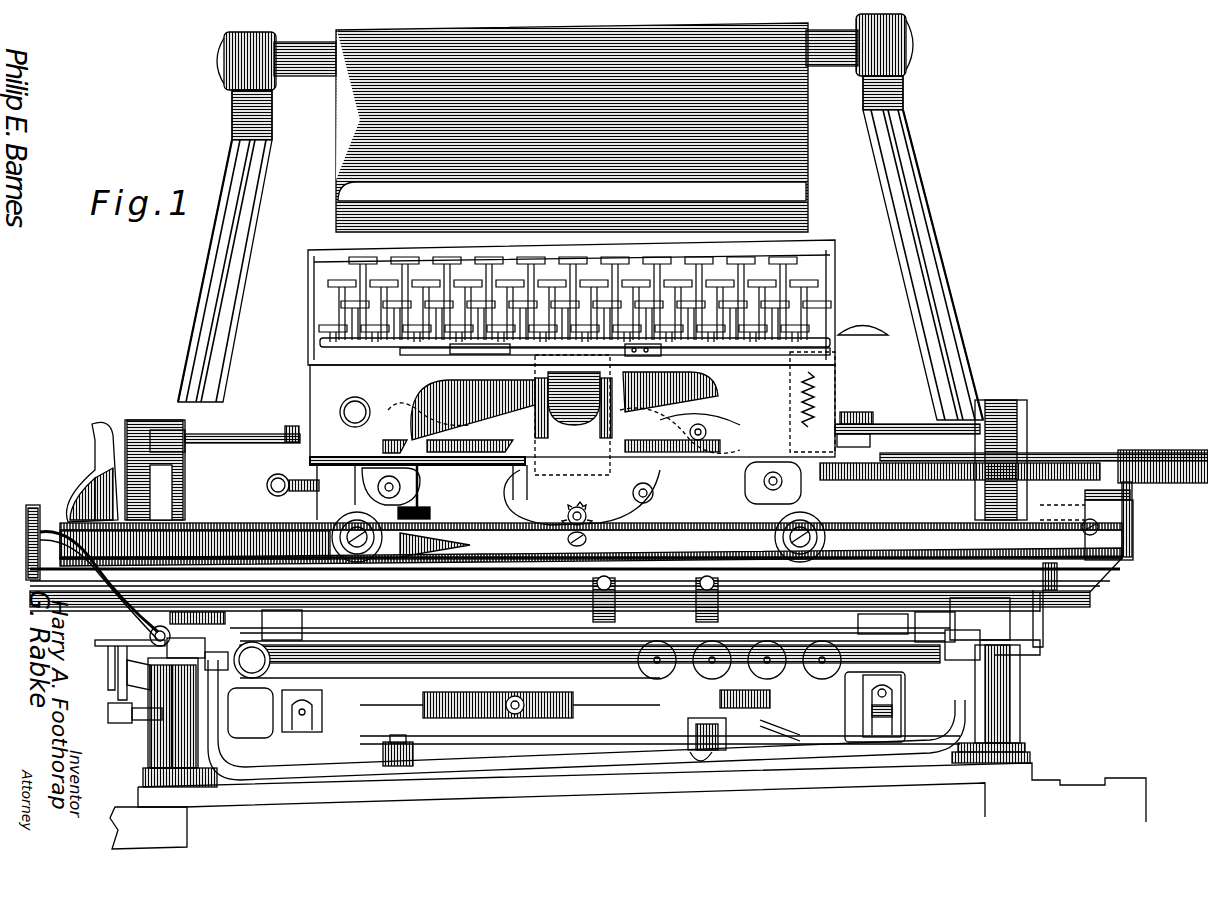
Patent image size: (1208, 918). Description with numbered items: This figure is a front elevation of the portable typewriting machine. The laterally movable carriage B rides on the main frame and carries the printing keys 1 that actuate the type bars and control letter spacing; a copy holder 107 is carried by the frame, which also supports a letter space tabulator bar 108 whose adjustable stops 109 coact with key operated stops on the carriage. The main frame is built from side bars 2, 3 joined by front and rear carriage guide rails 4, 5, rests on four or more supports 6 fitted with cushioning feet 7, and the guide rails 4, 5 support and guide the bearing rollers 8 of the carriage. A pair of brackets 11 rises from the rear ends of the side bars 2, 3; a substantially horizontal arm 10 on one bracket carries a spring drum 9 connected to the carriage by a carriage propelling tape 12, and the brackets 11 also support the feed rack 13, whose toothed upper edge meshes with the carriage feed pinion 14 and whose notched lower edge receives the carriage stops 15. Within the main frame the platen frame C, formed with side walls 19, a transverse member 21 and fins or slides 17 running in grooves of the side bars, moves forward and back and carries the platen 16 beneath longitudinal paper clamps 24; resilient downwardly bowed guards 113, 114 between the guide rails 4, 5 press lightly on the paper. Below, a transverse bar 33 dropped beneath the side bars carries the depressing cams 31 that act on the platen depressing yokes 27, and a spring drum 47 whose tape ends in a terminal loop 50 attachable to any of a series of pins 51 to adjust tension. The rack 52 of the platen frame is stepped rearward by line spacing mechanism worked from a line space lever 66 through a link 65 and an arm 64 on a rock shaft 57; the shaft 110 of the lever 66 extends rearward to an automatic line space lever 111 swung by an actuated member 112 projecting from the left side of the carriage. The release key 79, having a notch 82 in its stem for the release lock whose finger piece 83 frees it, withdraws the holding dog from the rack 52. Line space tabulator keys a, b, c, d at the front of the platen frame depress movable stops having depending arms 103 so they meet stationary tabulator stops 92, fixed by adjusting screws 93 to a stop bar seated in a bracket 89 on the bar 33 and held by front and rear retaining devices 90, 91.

The copy holder 107 is at (336, 146).
The printing keys 1 is at (540, 262).
The carriage B is at (583, 302).
The brackets 11 is at (1036, 410).
The automatic line space lever 111 is at (92, 430).
The adjusting screws 93 is at (55, 474).
The letter space tabulator bar 108 is at (268, 434).
The adjustable stops 109 is at (292, 426).
The spring drum 9 is at (1080, 453).
The carriage propelling tape 12 is at (960, 459).
The actuated member 112 is at (270, 480).
The horizontal arm 10 is at (1085, 496).
The carriage stops 15 is at (26, 525).
The line space lever 66 is at (105, 576).
The rear carriage guide rail 5 is at (339, 513).
The front carriage guide rail 4 is at (591, 544).
The feed rack 13 is at (611, 539).
The carriage feed pinion 14 is at (530, 505).
The bearing rollers 8 is at (855, 498).
The release key 79 is at (576, 585).
The notch 82 is at (208, 621).
The paper clamps 24 is at (580, 631).
The transverse member 21 is at (590, 615).
The platen 16 is at (592, 622).
The guard 113 is at (593, 614).
The guard 114 is at (728, 601).
The side walls 19 is at (883, 613).
The platen frame C is at (977, 617).
The rear retaining device 91 is at (1054, 618).
The fins or slides 17 is at (1060, 662).
The side bar 3 is at (1040, 642).
The line space tabulator key a is at (657, 667).
The line space tabulator key b is at (712, 667).
The line space tabulator key c is at (767, 667).
The line space tabulator key d is at (822, 667).
The terminal loop 50 is at (573, 697).
The pins 51 is at (573, 713).
The transverse bar 33 is at (660, 731).
The spring drum 47 is at (430, 746).
The bracket 89 is at (688, 732).
The front retaining device 90 is at (700, 760).
The depending arm 103 is at (770, 704).
The line space tabulator stops 92 is at (783, 737).
The depressing cams 31 is at (863, 705).
The platen depressing yokes 27 is at (330, 760).
The rack 52 is at (250, 713).
The side bar 2 is at (176, 703).
The shaft 110 is at (112, 641).
The finger piece 83 is at (108, 663).
The link 65 is at (108, 684).
The arm 64 is at (103, 707).
The rock shaft 57 is at (118, 721).
The supports 6 is at (1020, 706).
The cushioning feet 7 is at (985, 770).